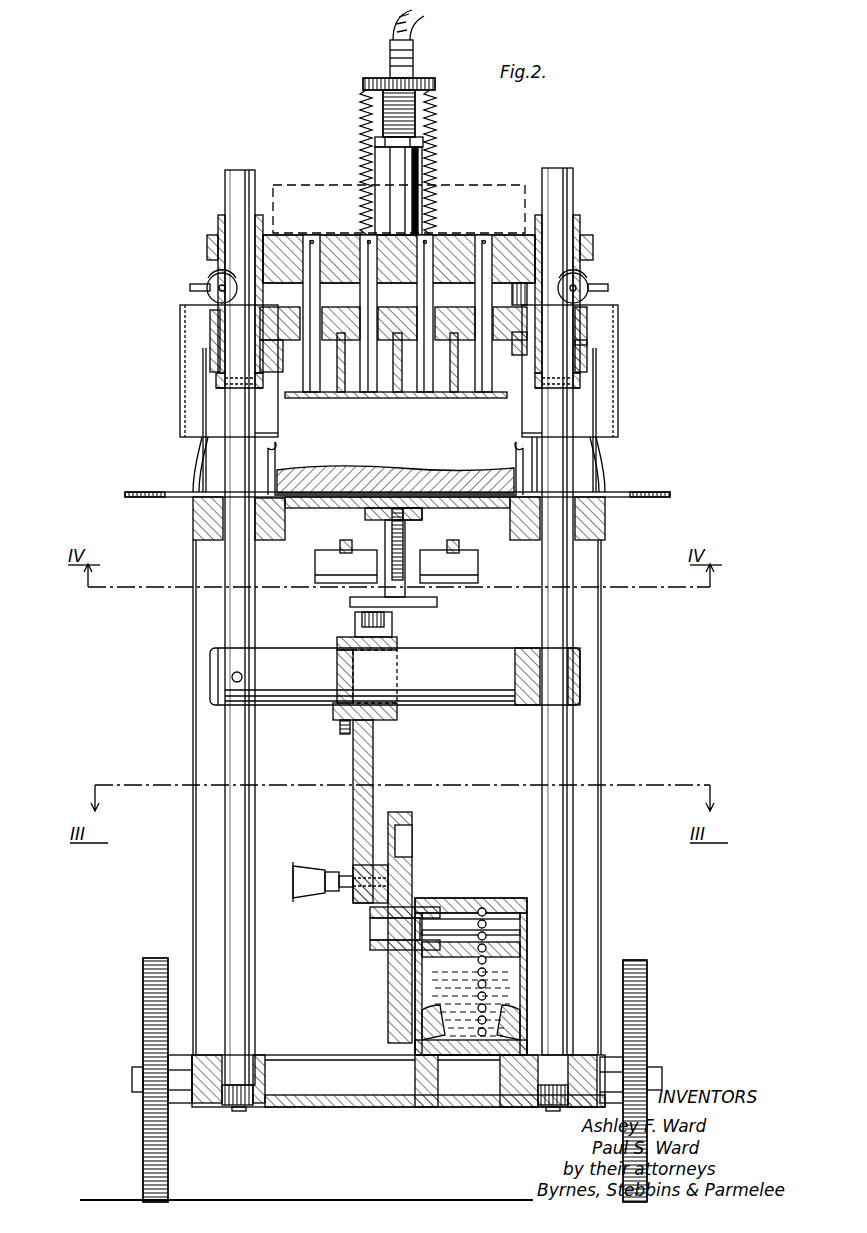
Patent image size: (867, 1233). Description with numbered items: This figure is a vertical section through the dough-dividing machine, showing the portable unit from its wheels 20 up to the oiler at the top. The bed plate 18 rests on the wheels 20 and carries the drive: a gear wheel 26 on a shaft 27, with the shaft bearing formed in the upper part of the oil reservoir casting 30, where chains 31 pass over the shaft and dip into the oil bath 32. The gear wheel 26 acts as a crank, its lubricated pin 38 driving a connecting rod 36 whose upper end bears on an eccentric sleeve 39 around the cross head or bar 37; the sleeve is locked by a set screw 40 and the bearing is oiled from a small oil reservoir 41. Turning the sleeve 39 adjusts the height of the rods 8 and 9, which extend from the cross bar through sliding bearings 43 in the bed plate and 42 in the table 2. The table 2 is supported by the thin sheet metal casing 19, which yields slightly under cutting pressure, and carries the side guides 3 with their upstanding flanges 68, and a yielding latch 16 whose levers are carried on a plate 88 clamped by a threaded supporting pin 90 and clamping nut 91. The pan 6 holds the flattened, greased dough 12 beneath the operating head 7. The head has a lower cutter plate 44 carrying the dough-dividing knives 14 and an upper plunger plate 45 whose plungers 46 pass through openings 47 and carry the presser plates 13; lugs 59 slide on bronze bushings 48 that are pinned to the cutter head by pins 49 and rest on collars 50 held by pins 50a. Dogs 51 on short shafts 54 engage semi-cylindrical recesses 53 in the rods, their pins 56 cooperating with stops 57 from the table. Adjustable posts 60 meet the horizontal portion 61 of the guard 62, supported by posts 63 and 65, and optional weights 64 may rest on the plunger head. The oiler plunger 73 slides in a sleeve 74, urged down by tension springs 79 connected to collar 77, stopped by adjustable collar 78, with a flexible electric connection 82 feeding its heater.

The table or bed plate 2 is at (605, 522).
The adjustable side guides 3 is at (128, 493).
The pan 6 is at (395, 468).
The operating head 7 is at (465, 238).
The plunger or rod 8 is at (238, 190).
The plunger or rod 9 is at (565, 185).
The flattened dough 12 is at (397, 470).
The presser plates 13 is at (300, 398).
The dough-dividing knives 14 is at (340, 390).
The yielding latch 16 is at (340, 555).
The bed plate 18 is at (292, 1107).
The vertical sheet metal casing 19 is at (193, 735).
The wheels 20 is at (150, 1014).
The gear wheel 26 is at (390, 950).
The shaft 27 is at (375, 935).
The oil reservoir casting 30 is at (448, 900).
The chains 31 is at (484, 905).
The oil bath 32 is at (445, 983).
The connecting rod 36 is at (353, 815).
The cross head or bar 37 is at (467, 700).
The lubricated pin 38 is at (355, 900).
The eccentric sleeve 39 is at (338, 640).
The set screw 40 is at (340, 725).
The oil reservoir 41 is at (392, 622).
The sliding bearings 42 is at (285, 522).
The sliding bearings 43 is at (240, 1105).
The knife-carrying or cutter plate 44 is at (448, 320).
The plunger plate 45 is at (467, 313).
The plungers 46 is at (305, 294).
The openings 47 is at (500, 365).
The bronze sleeves or bushings 48 is at (220, 222).
The pins 49 is at (212, 335).
The collars 50 is at (216, 386).
The pins 50a is at (643, 380).
The latches or dogs 51 is at (212, 300).
The semi-cylindrical recesses 53 is at (218, 272).
The short shafts 54 is at (210, 280).
The projecting pins 56 is at (190, 288).
The stops 57 is at (203, 360).
The lugs 59 is at (208, 240).
The adjustable posts or pins 60 is at (586, 350).
The horizontal portion 61 is at (278, 433).
The guard plate or shield 62 is at (180, 432).
The supporting posts 63 is at (538, 470).
The weights 64 is at (472, 200).
The posts 65 is at (200, 448).
The upstanding flanges 68 is at (442, 519).
The plunger 73 is at (415, 108).
The sleeve 74 is at (390, 174).
The collar 77 is at (420, 82).
The adjustable collar 78 is at (375, 143).
The tension springs 79 is at (362, 117).
The flexible electric connection 82 is at (390, 22).
The plate 88 is at (368, 514).
The threaded supporting pin 90 is at (405, 516).
The clamping nut 91 is at (395, 578).